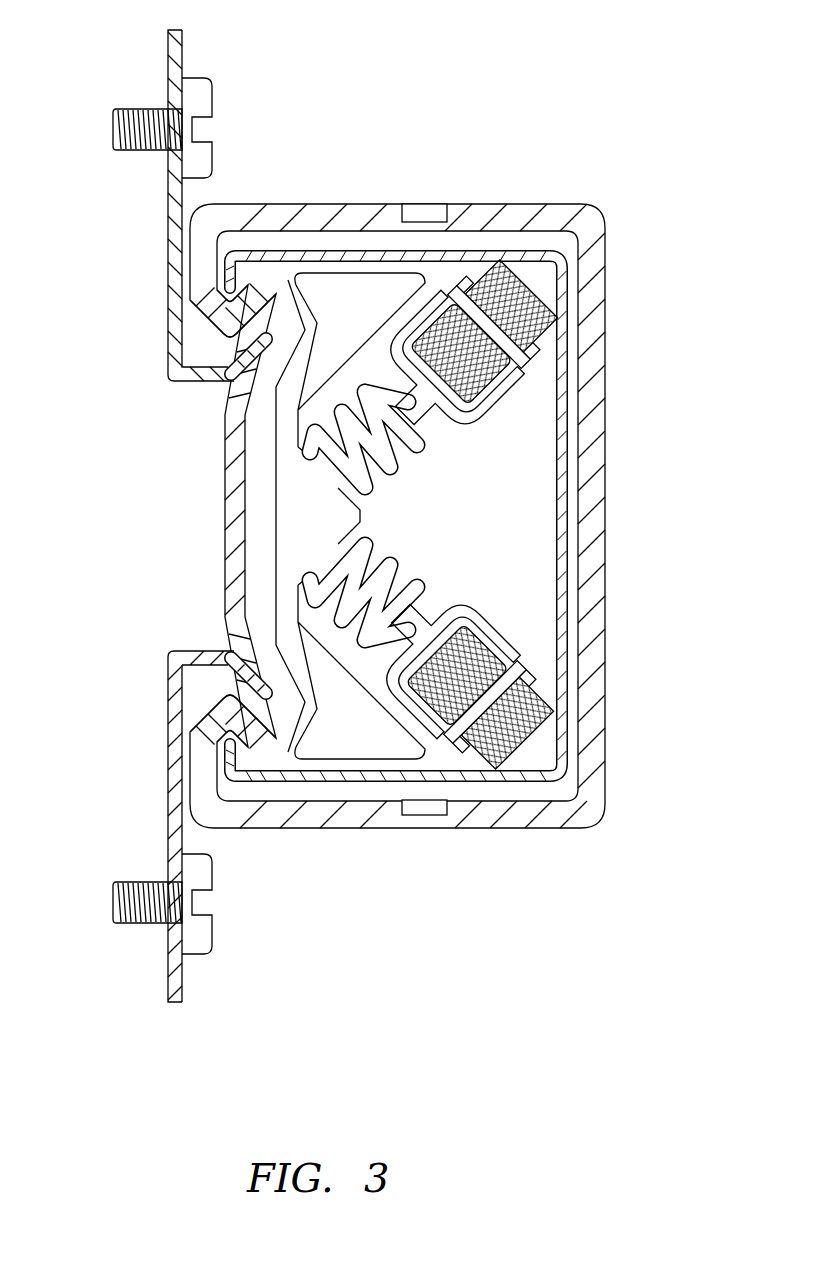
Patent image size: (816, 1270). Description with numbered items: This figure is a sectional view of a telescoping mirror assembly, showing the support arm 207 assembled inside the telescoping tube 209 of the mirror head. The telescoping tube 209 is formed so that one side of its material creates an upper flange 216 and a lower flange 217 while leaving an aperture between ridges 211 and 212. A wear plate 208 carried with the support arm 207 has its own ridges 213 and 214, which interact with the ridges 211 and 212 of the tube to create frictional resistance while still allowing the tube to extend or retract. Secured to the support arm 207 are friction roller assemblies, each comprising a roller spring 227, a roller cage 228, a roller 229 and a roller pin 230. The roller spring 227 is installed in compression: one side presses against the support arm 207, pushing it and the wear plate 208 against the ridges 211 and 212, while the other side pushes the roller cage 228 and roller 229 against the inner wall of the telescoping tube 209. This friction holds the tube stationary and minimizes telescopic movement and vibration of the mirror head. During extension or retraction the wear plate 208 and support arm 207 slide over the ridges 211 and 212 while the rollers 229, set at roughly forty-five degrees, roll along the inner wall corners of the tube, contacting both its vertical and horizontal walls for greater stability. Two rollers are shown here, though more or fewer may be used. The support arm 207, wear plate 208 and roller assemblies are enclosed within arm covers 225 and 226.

The support arm 207 is at (293, 475).
The wear plate 208 is at (232, 512).
The telescoping tube 209 is at (230, 763).
The ridge 211 is at (228, 334).
The ridge 212 is at (232, 695).
The ridge 213 is at (256, 326).
The ridge 214 is at (250, 705).
The upper flange 216 is at (169, 52).
The lower flange 217 is at (168, 975).
The arm cover 225 is at (327, 204).
The arm cover 226 is at (605, 690).
The roller spring 227 is at (403, 470).
The roller cage 228 is at (493, 410).
The roller 229 is at (545, 333).
The roller pin 230 is at (530, 363).